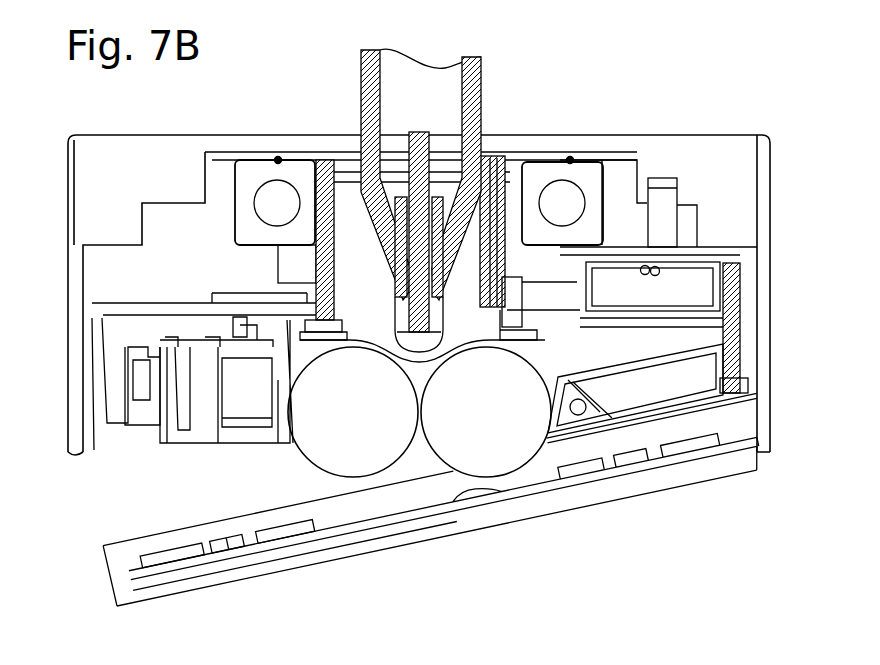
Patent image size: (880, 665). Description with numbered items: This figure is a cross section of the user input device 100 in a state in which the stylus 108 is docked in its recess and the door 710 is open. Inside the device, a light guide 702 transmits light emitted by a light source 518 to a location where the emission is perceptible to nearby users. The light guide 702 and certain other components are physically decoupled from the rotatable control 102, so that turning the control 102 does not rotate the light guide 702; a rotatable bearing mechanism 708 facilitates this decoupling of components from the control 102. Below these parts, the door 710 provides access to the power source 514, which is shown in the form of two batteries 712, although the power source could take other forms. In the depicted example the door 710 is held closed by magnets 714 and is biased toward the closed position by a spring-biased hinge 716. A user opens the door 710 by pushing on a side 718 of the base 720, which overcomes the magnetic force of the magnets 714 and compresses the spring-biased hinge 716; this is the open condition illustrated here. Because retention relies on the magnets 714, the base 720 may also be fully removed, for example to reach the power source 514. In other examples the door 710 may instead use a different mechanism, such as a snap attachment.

The user input device 100 is at (645, 56).
The control 102 is at (718, 134).
The stylus 108 is at (481, 84).
The power source 514 is at (541, 358).
The light source 518 is at (520, 300).
The light guide 702 is at (368, 180).
The rotatable bearing mechanism 708 is at (279, 156).
The door 710 is at (118, 577).
The batteries 712 is at (419, 412).
The magnets 714 is at (240, 445).
The spring-biased hinge 716 is at (590, 388).
The side 718 is at (670, 494).
The base 720 is at (445, 545).